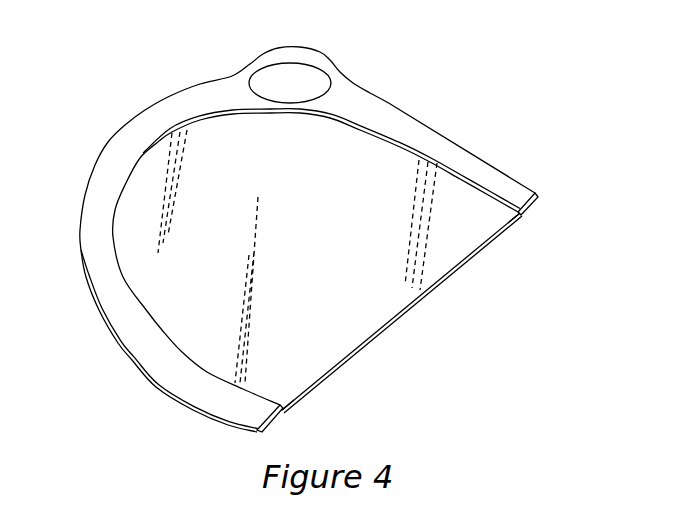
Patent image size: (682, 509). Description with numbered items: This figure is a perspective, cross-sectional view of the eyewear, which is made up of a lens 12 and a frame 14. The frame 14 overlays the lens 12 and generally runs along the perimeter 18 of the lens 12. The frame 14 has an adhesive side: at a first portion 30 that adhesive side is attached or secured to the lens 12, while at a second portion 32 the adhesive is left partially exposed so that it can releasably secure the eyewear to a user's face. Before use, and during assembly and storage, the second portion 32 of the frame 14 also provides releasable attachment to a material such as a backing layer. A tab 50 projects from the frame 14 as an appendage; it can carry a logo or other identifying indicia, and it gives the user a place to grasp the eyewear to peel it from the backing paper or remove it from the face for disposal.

The frame 14 is at (142, 128).
The tab 50 is at (288, 58).
The lens 12 is at (366, 325).
The perimeter 18 is at (525, 208).
The first portion 30 is at (528, 200).
The second portion 32 is at (528, 198).